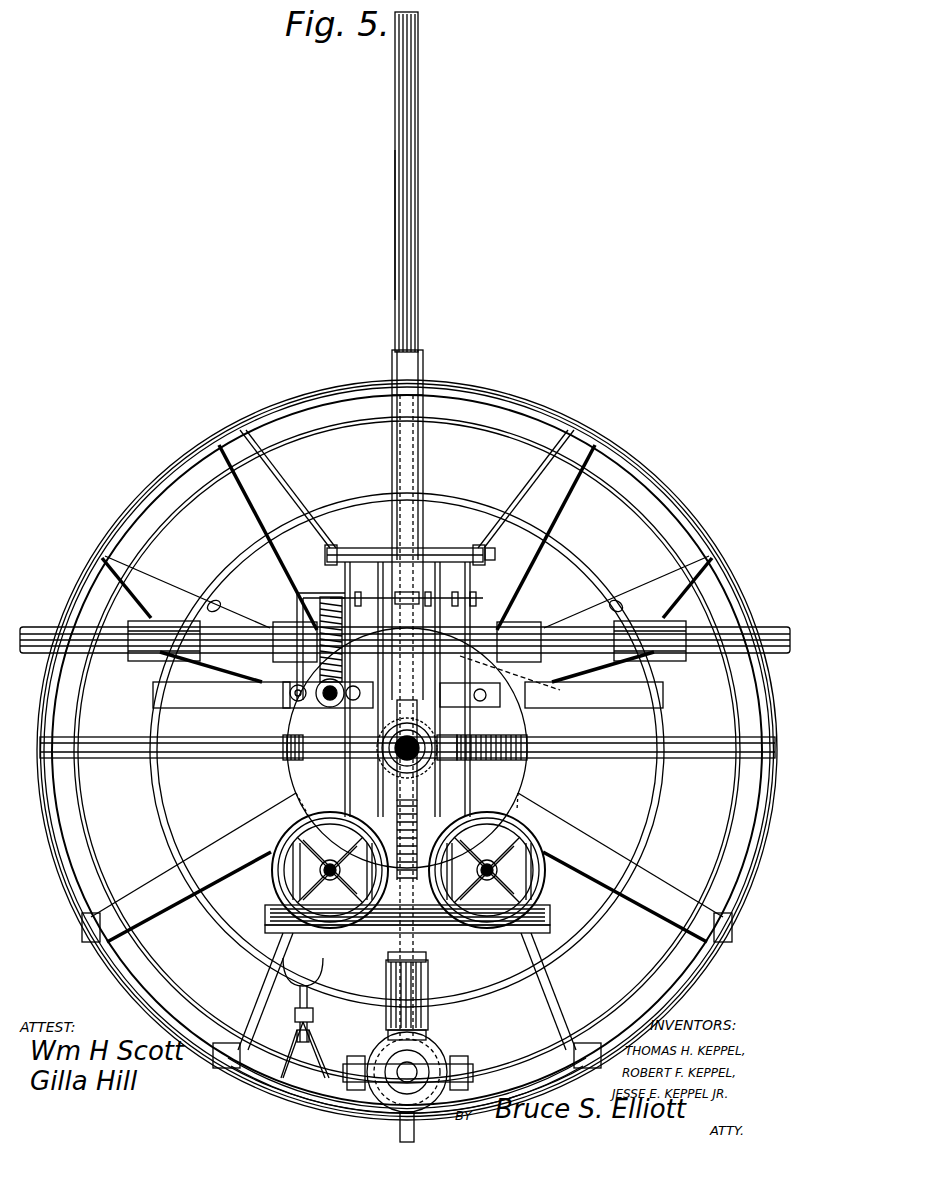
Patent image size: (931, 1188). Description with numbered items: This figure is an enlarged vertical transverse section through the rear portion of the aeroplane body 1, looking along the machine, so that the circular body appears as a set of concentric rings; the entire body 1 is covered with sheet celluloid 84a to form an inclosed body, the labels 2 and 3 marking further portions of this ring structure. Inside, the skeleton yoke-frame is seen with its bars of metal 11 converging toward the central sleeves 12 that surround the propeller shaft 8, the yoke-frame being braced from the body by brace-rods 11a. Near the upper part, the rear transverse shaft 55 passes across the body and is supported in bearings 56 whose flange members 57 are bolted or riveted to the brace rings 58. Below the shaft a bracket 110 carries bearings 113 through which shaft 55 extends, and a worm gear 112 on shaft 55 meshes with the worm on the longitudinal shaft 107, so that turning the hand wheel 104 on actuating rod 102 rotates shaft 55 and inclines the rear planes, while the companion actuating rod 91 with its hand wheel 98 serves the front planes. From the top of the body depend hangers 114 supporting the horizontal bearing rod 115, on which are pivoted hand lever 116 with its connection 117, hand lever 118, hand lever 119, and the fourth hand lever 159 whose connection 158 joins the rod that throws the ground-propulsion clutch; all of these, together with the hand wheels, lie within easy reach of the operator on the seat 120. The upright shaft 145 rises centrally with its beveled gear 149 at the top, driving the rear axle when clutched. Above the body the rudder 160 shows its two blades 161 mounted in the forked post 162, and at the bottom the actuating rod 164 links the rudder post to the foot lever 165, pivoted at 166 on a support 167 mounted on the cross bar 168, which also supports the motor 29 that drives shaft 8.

The body 1 is at (508, 398).
The braces 2 is at (300, 547).
The inner ring 3 is at (683, 520).
The shaft 8 is at (428, 740).
The bars of metal 11 is at (503, 745).
The brace-rods 11a is at (114, 744).
The sleeves 12 is at (392, 738).
The motor 29 is at (438, 1050).
The shaft 55 is at (545, 630).
The bearings 56 is at (156, 626).
The flange members 57 is at (222, 602).
The brace rings 58 is at (578, 550).
The sheet celluloid 84a is at (300, 394).
The actuating rod 91 is at (498, 870).
The hand wheel 98 is at (540, 850).
The actuating rod 102 is at (292, 850).
The hand wheel 104 is at (283, 862).
The shaft 107 is at (300, 709).
The bracket 110 is at (297, 593).
The worm gear 112 is at (318, 612).
The bearings 113 is at (358, 625).
The hangers 114 is at (290, 490).
The bearing rod 115 is at (490, 555).
The hand lever 116 is at (470, 695).
The pivotal connection 117 is at (448, 612).
The hand lever 118 is at (382, 547).
The hand lever 119 is at (338, 708).
The seat 120 is at (540, 927).
The upright shaft 145 is at (399, 1128).
The beveled gear 149 is at (465, 790).
The pivotal connection 158 is at (477, 598).
The hand lever 159 is at (522, 680).
The rudder 160 is at (429, 182).
The blades 161 is at (404, 214).
The forked post 162 is at (424, 350).
The actuating rod 164 is at (293, 878).
The foot lever 165 is at (300, 1000).
The pivot 166 is at (314, 1016).
The support 167 is at (322, 1040).
The cross bar 168 is at (297, 1075).